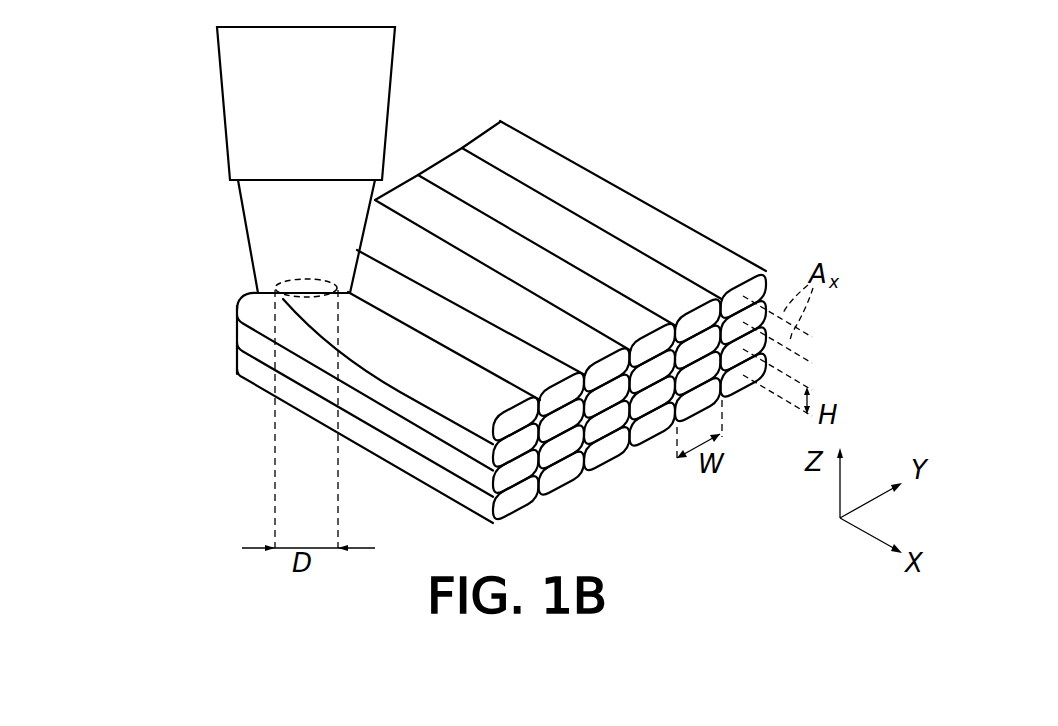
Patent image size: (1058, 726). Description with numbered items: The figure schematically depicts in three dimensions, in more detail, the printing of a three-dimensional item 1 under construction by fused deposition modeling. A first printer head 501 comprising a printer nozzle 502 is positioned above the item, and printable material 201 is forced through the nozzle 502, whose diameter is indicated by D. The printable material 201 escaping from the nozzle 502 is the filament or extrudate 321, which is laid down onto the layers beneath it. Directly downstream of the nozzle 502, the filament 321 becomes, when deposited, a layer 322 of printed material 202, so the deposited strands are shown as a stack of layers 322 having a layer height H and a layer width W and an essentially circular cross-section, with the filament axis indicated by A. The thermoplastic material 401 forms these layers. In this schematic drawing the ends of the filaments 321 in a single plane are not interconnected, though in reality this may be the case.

The 3D item 1 is at (515, 312).
The 3D printable material 201 is at (358, 327).
The filament 321 is at (414, 262).
The layer 322 is at (247, 308).
The 3D printed material 202 is at (392, 358).
The thermoplastic material 401 is at (473, 447).
The first printer head 501 is at (225, 119).
The printer nozzle 502 is at (244, 296).